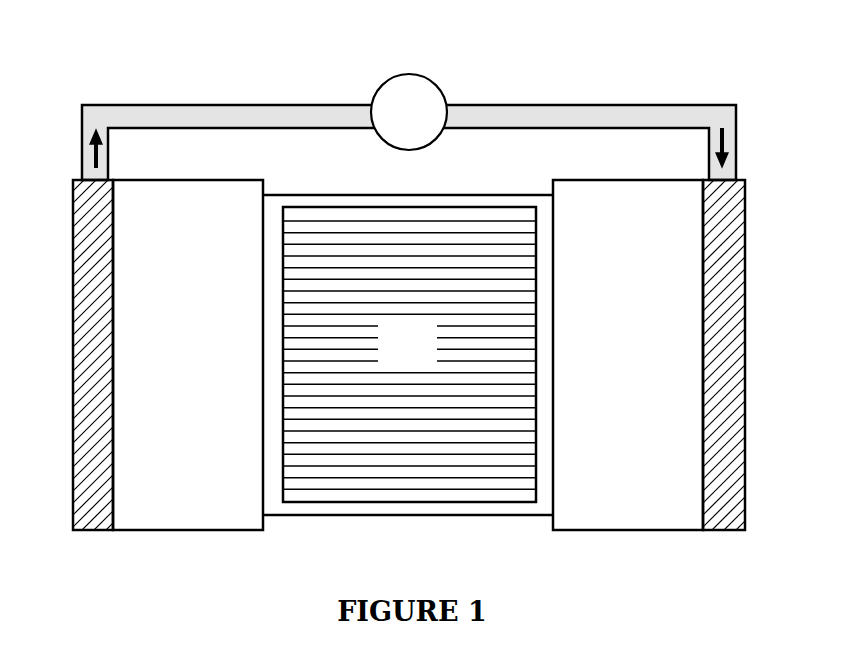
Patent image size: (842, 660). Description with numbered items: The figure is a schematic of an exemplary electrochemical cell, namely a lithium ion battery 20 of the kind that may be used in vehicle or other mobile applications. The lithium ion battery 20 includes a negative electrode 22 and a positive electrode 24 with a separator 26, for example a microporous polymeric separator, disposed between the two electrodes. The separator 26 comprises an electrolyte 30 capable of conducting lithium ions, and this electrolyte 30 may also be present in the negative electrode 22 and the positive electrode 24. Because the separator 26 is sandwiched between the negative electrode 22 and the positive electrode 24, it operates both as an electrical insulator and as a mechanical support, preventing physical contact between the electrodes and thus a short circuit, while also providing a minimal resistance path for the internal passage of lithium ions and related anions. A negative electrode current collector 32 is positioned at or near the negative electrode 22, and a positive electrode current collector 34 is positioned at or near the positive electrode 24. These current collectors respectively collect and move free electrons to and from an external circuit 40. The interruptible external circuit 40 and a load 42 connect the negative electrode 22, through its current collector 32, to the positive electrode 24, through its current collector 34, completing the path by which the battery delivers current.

The lithium ion battery 20 is at (82, 58).
The negative electrode 22 is at (188, 355).
The positive electrode 24 is at (628, 355).
The separator 26 is at (408, 517).
The electrolyte 30 is at (409, 354).
The negative electrode current collector 32 is at (70, 258).
The positive electrode current collector 34 is at (748, 252).
The external circuit 40 is at (228, 103).
The load 42 is at (409, 112).